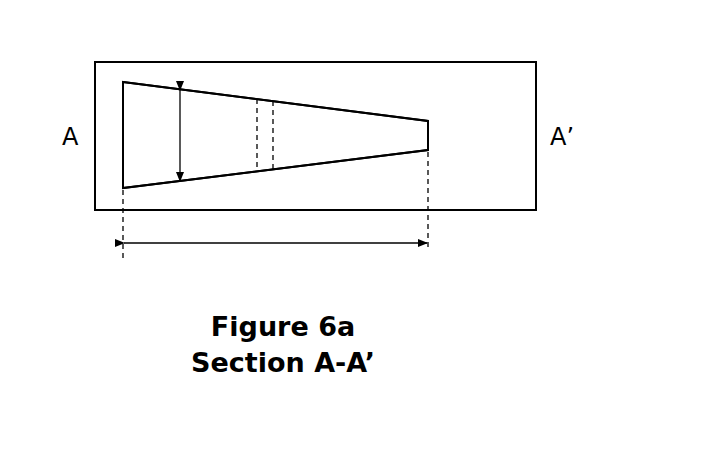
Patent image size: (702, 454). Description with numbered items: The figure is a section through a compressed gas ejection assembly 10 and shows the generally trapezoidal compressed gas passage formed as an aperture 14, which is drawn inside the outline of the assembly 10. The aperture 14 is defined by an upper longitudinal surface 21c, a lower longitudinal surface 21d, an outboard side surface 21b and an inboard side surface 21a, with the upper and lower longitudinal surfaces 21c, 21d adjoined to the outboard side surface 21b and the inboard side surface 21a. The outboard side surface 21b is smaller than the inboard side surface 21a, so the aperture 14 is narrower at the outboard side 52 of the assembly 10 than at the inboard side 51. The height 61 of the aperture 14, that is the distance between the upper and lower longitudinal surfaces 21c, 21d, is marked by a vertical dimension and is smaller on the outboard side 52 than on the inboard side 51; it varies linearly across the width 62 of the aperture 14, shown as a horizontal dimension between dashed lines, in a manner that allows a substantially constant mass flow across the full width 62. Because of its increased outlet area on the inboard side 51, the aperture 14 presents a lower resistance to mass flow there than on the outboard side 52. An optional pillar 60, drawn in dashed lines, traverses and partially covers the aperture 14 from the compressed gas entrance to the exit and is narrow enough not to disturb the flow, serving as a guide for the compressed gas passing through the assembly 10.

The compressed gas ejection assembly 10 is at (491, 62).
The aperture 14 is at (359, 128).
The inboard side surface 21a is at (123, 112).
The outboard side surface 21b is at (428, 132).
The upper longitudinal surface 21c is at (222, 93).
The lower longitudinal surface 21d is at (342, 160).
The inboard side 51 is at (95, 204).
The outboard side 52 is at (536, 194).
The pillar 60 is at (266, 102).
The height 61 is at (161, 135).
The width 62 is at (275, 216).